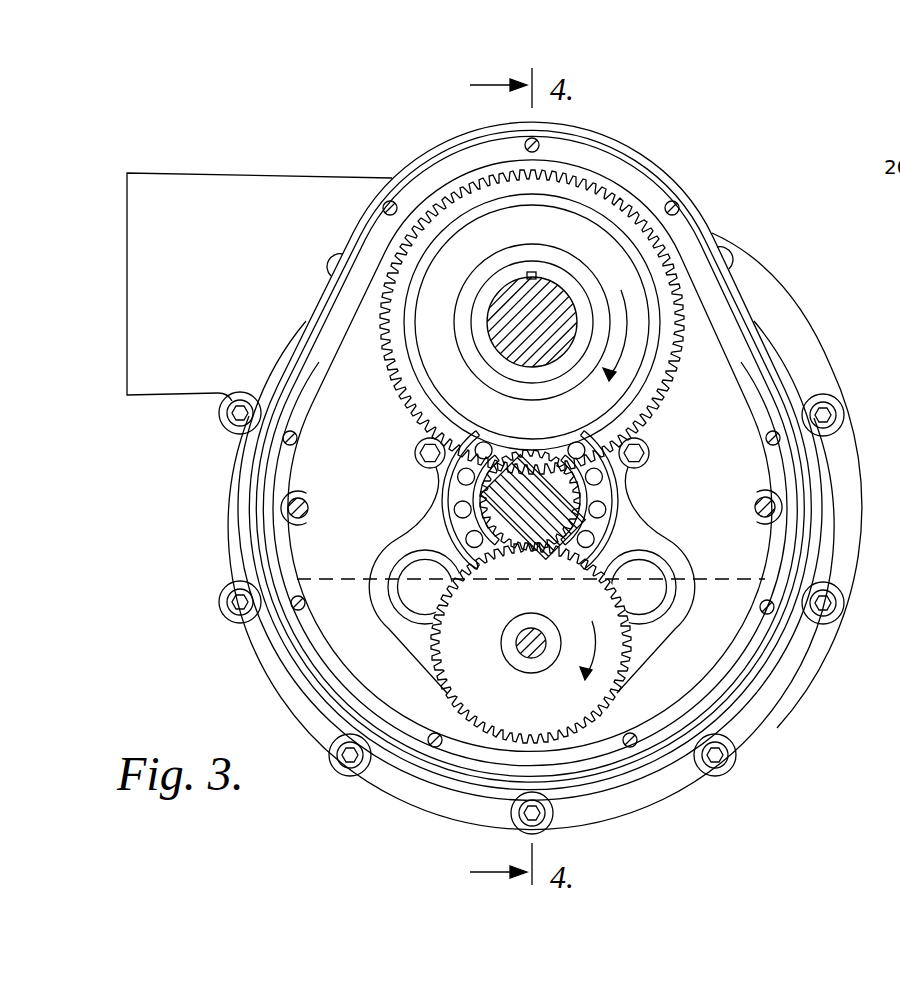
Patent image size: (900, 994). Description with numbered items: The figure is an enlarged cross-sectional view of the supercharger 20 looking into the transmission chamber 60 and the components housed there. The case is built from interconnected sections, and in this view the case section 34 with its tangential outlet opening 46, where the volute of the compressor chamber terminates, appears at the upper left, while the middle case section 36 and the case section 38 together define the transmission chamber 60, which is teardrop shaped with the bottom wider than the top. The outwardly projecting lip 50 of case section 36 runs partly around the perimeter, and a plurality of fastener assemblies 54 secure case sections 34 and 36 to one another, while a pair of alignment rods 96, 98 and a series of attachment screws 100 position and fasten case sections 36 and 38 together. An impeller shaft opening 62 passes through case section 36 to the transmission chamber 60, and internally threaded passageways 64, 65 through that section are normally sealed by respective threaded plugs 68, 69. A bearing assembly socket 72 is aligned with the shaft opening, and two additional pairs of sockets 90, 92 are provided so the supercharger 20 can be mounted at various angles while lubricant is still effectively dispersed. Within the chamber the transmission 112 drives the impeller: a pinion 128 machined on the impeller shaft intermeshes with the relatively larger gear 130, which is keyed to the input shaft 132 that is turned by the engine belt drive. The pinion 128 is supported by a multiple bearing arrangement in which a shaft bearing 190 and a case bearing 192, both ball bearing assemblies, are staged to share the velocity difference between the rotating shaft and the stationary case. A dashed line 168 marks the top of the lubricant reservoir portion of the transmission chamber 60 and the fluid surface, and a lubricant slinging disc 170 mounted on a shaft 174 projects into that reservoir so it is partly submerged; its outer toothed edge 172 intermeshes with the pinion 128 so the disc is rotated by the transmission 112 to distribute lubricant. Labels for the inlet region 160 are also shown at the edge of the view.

The supercharger 20 is at (749, 253).
The case section 34 is at (352, 184).
The case section 36 is at (628, 164).
The case section 38 is at (865, 489).
The tangential outlet opening 46 is at (258, 309).
The outwardly projecting lip 50 is at (592, 790).
The fastener assemblies 54 is at (838, 403).
The transmission chamber 60 is at (346, 409).
The impeller shaft opening 62 is at (892, 268).
The internally threaded passageway 64 is at (415, 448).
The internally threaded passageway 65 is at (648, 448).
The threaded plug 68 is at (428, 468).
The threaded plug 69 is at (648, 456).
The bearing assembly socket 72 is at (621, 491).
The bearing assembly sockets 90 is at (400, 598).
The bearing assembly sockets 92 is at (652, 602).
The alignment rod 96 is at (300, 497).
The alignment rod 98 is at (757, 514).
The attachment screws 100 is at (679, 201).
The transmission 112 is at (458, 185).
The pinion 128 is at (515, 535).
The gear 130 is at (397, 250).
The input shaft 132 is at (535, 358).
The compressor inlet housing 160 is at (888, 217).
The dashed line 168 is at (344, 570).
The lubricant slinging disc 170 is at (448, 678).
The outer toothed edge 172 is at (600, 712).
The shaft 174 is at (534, 655).
The shaft bearing 190 is at (574, 541).
The case bearing 192 is at (604, 553).